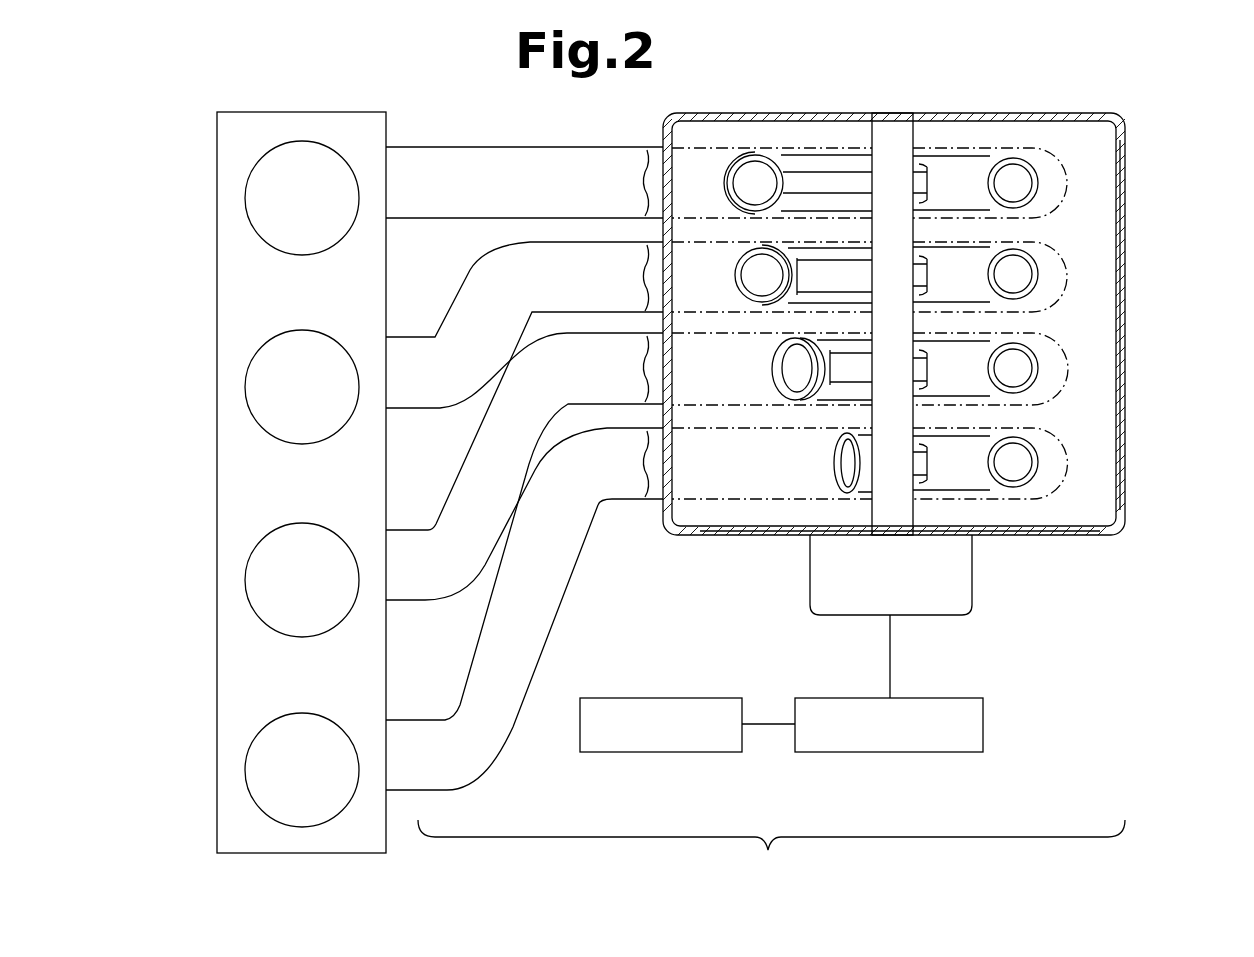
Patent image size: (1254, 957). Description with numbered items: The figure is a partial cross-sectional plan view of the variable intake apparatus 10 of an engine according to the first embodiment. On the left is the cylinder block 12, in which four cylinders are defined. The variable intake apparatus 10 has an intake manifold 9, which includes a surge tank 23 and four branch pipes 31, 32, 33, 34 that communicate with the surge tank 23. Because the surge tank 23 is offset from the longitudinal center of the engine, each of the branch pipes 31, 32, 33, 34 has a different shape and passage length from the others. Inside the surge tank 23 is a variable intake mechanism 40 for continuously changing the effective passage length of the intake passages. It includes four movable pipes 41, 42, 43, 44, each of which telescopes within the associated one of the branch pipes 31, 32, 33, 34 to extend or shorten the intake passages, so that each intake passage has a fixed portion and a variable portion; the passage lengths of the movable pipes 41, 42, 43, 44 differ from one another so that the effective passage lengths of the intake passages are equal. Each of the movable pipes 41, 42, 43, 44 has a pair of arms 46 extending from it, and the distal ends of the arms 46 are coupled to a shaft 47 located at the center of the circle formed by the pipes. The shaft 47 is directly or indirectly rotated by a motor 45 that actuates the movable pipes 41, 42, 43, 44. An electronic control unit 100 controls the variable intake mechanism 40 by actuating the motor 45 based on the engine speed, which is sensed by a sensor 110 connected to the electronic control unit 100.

The cylinder block 12 is at (372, 110).
The branch pipe 34 is at (410, 218).
The branch pipe 33 is at (413, 408).
The branch pipe 32 is at (413, 600).
The branch pipe 31 is at (532, 662).
The variable intake mechanism 40 is at (1097, 143).
The surge tank 23 is at (1128, 446).
The intake manifold 9 is at (1125, 530).
The shaft 47 is at (890, 537).
The arms 46 is at (837, 172).
The movable pipe 44 is at (981, 194).
The movable pipe 43 is at (981, 285).
The movable pipe 42 is at (981, 381).
The movable pipe 41 is at (981, 476).
The motor 45 is at (972, 582).
The sensor 110 is at (747, 686).
The electronic control unit 100 is at (995, 686).
The variable intake apparatus 10 is at (793, 899).